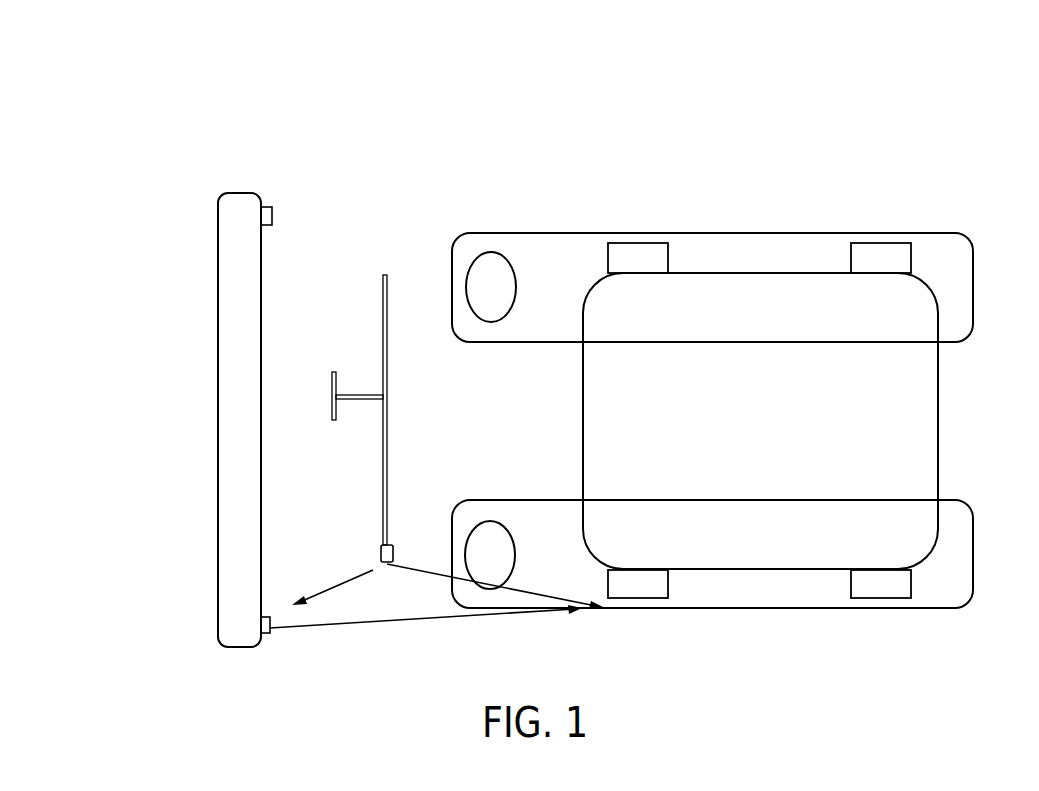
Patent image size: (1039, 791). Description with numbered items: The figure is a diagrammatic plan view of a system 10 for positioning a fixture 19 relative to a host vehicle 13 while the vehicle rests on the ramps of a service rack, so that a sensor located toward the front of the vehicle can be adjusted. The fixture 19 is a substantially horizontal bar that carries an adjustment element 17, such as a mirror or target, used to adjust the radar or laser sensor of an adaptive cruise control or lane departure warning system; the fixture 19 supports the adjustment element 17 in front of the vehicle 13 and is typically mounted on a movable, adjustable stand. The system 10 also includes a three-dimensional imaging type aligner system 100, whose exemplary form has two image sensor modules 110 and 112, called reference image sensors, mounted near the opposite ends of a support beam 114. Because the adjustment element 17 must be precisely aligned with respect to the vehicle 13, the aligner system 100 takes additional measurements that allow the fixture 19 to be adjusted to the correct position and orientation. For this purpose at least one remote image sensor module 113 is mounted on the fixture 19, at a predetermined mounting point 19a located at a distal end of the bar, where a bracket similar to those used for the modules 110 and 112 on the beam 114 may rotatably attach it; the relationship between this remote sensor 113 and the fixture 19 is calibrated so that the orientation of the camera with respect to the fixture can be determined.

The 3D imaging type aligner system 100 is at (120, 186).
The system 10 is at (250, 128).
The support beam 114 is at (218, 377).
The image sensor module 112 is at (272, 207).
The image sensor module 110 is at (265, 635).
The fixture 19 is at (387, 287).
The adjustment element 17 is at (332, 378).
The mounting point 19a is at (381, 546).
The remote image sensor module 113 is at (389, 564).
The host vehicle 13 is at (724, 420).